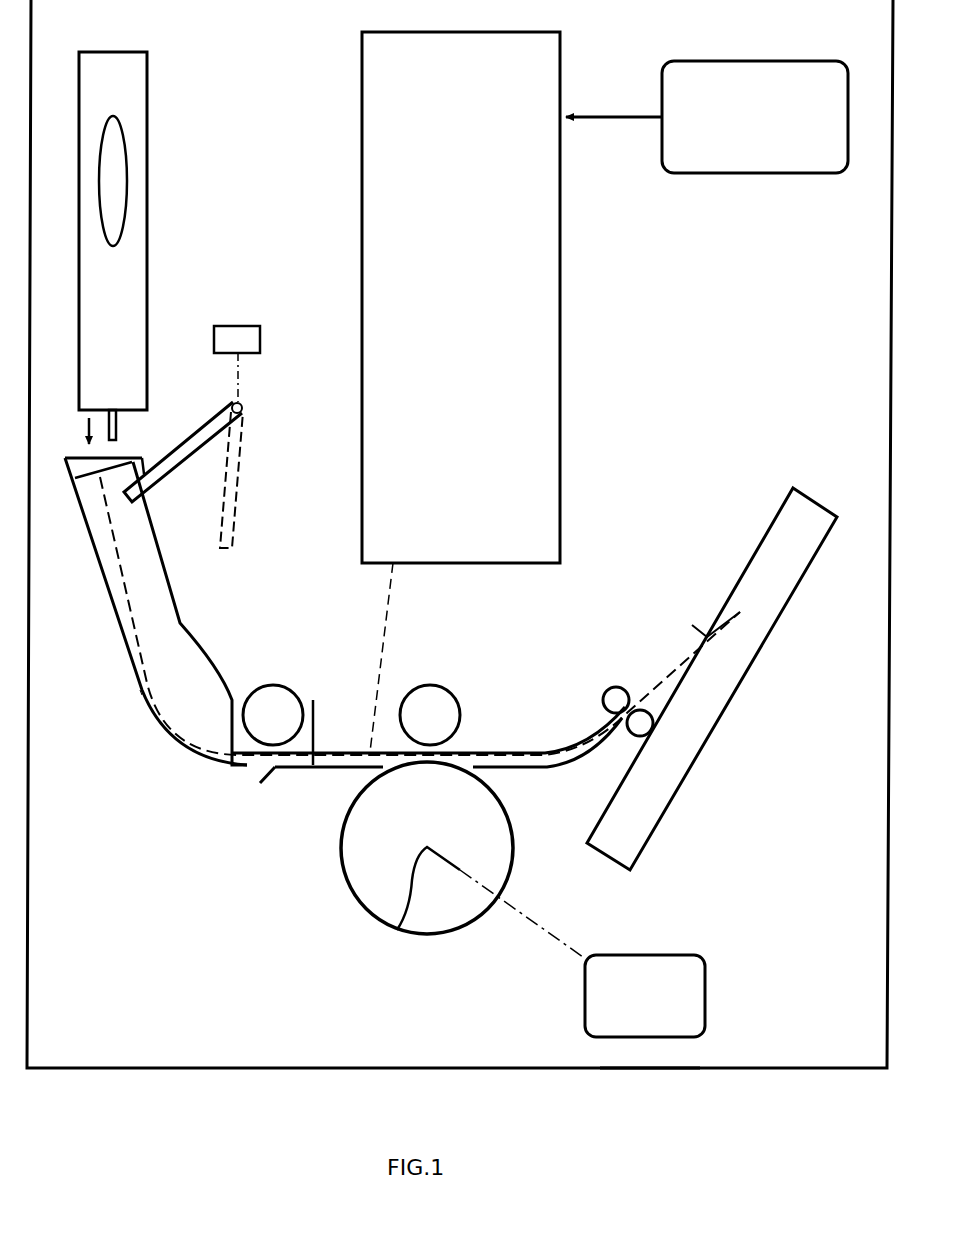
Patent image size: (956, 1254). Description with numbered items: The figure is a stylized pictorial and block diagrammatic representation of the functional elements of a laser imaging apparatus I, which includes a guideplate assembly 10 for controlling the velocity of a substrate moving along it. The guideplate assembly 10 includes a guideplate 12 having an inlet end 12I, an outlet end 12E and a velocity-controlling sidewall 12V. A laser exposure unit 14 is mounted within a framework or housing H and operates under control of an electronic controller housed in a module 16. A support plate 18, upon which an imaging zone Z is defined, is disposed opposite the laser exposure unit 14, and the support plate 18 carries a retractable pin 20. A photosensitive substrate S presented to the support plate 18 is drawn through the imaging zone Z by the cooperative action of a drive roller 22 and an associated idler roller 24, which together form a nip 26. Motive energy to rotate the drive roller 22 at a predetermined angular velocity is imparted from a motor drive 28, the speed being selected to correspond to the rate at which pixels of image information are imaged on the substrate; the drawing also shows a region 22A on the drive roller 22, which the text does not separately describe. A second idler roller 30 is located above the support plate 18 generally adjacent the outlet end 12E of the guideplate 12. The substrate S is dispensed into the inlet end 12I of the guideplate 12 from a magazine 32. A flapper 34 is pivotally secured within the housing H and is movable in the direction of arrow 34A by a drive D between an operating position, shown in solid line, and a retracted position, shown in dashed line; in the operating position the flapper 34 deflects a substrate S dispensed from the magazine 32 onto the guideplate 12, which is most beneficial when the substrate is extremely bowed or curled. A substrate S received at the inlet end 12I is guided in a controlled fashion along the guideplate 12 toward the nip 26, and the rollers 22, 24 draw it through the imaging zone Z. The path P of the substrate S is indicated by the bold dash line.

The guideplate assembly 10 is at (140, 728).
The guideplate 12 is at (125, 628).
The inlet end 12I is at (62, 474).
The velocity-controlling sidewall 12V is at (185, 600).
The outlet end 12E is at (242, 768).
The laser exposure unit 14 is at (500, 32).
The module 16 is at (750, 61).
The support plate 18 is at (295, 775).
The retractable pin 20 is at (313, 700).
The drive roller 22 is at (352, 889).
The drum print head region 22A is at (403, 923).
The idler roller 24 is at (440, 687).
The nip 26 is at (358, 776).
The motor drive 28 is at (655, 955).
The second idler roller 30 is at (290, 685).
The magazine 32 is at (118, 52).
The flapper 34 is at (228, 410).
The arrow 34A is at (167, 487).
The drive D is at (237, 364).
The photosensitive substrate S is at (118, 420).
The path P is at (150, 650).
The imaging zone Z is at (369, 748).
The housing H is at (28, 860).
The laser imaging apparatus I is at (618, 1068).